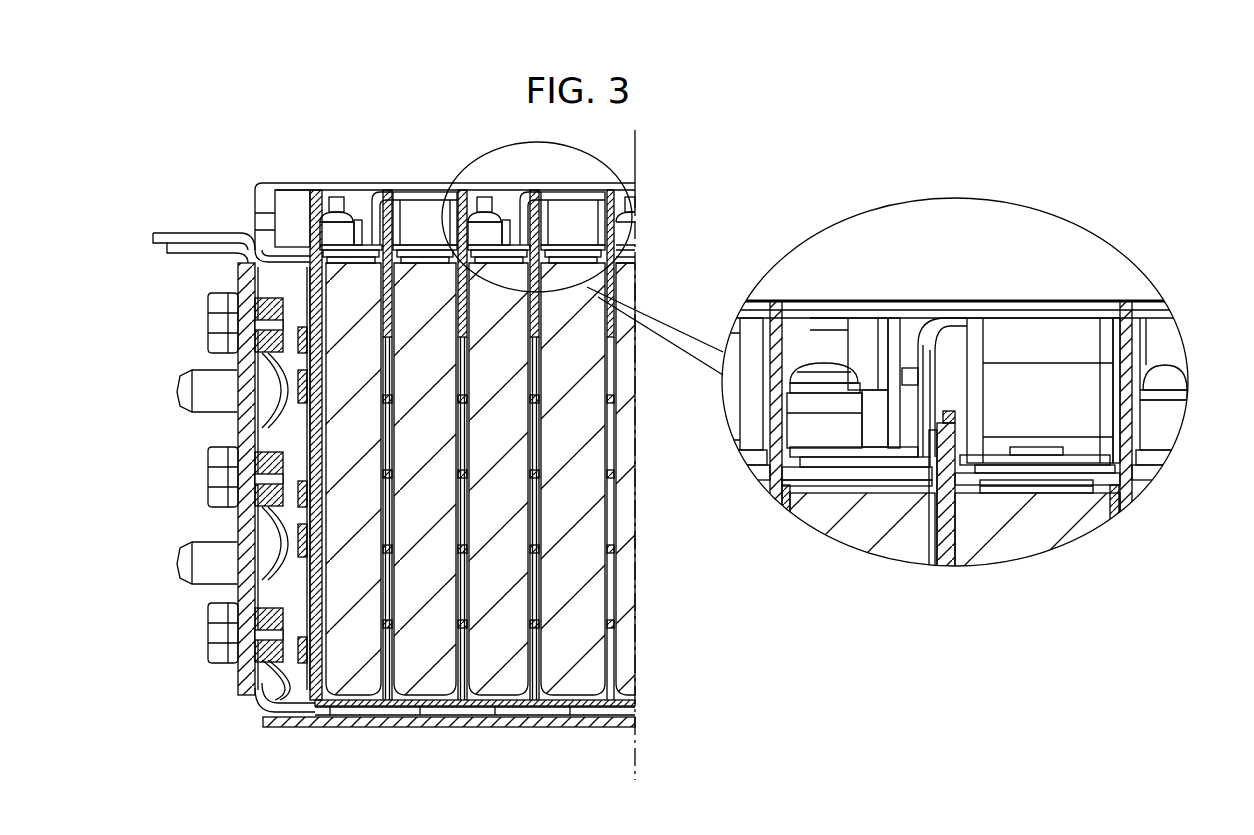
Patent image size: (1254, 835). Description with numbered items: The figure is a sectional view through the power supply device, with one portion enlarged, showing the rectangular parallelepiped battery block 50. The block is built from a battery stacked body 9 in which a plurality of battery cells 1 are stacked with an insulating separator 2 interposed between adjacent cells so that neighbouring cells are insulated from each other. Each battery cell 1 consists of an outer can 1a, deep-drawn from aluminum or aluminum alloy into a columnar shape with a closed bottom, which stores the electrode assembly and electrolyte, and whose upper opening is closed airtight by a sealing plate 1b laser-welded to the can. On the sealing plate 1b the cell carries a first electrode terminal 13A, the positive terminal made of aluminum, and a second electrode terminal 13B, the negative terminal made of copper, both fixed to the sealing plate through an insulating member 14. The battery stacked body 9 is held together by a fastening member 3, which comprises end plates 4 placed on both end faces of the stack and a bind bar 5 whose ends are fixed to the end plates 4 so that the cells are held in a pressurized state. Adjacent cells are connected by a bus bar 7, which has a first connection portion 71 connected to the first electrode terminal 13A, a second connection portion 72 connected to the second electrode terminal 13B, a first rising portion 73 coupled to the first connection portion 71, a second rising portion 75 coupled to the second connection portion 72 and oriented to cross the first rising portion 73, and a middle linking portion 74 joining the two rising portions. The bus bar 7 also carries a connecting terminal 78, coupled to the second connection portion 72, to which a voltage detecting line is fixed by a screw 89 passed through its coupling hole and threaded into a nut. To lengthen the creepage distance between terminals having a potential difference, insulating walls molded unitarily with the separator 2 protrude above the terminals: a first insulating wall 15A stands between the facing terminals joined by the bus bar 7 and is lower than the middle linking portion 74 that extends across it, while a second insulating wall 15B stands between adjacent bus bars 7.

The battery block 50 is at (372, 150).
The battery cell 1 is at (573, 513).
The outer can 1a is at (1000, 497).
The sealing plate 1b is at (1099, 495).
The separator 2 is at (540, 327).
The fastening member 3 is at (148, 420).
The end plate 4 is at (250, 530).
The bind bar 5 is at (247, 427).
The bus bar 7 is at (807, 140).
The battery stacked body 9 is at (635, 735).
The first electrode terminal 13A is at (993, 450).
The second electrode terminal 13B is at (898, 440).
The insulating member 14 is at (1030, 486).
The first insulating wall 15A is at (935, 480).
The second insulating wall 15B is at (740, 300).
The first connection portion 71 is at (1075, 457).
The second connection portion 72 is at (808, 372).
The first rising portion 73 is at (1022, 420).
The middle linking portion 74 is at (928, 445).
The second rising portion 75 is at (870, 430).
The connecting terminal 78 is at (803, 430).
The screw 89 is at (808, 370).